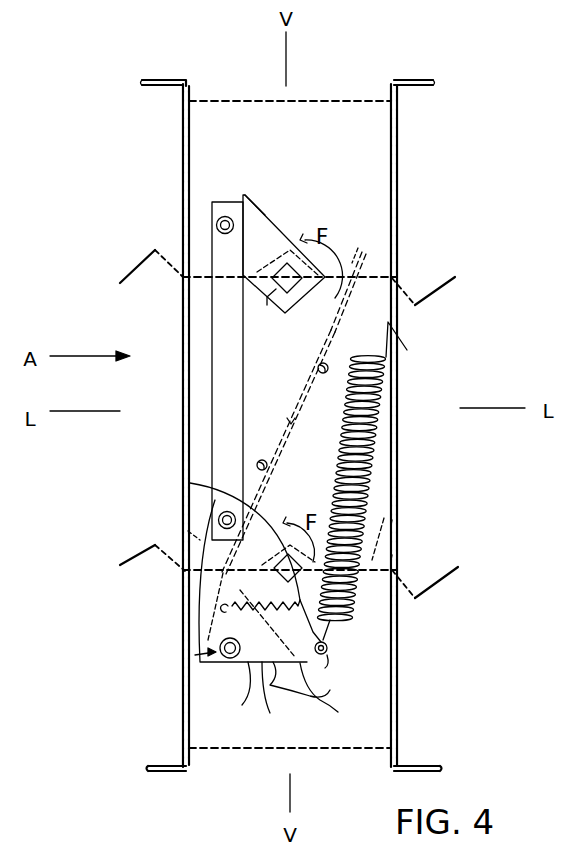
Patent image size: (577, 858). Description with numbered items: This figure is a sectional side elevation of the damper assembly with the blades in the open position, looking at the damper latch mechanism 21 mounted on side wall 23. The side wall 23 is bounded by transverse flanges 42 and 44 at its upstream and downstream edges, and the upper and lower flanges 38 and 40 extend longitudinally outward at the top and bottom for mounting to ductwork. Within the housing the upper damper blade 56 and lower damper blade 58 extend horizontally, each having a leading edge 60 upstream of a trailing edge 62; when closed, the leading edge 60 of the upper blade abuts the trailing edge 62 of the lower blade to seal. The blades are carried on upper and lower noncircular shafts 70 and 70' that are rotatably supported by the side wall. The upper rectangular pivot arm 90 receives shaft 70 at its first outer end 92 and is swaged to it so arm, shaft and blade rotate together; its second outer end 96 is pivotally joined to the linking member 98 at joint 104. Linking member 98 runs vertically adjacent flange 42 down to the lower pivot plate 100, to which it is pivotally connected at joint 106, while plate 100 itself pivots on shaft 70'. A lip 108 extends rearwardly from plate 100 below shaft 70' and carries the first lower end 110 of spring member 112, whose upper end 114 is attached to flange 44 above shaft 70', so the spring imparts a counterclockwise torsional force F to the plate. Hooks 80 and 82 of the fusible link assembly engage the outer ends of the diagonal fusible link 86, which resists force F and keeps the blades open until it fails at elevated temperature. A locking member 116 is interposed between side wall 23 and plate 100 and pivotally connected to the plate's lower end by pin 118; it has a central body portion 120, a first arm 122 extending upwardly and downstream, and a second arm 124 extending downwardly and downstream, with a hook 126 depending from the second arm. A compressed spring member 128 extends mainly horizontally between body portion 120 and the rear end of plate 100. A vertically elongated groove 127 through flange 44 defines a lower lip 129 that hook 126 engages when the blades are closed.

The damper latch mechanism 21 is at (266, 239).
The side wall 23 is at (255, 142).
The upper flange 38 is at (142, 81).
The lower flange 40 is at (148, 767).
The flange 42 is at (184, 186).
The flange 44 is at (397, 178).
The upper damper blade 56 is at (357, 243).
The lower damper blade 58 is at (395, 506).
The leading edge 60 is at (120, 283).
The trailing edge 62 is at (455, 277).
The upper noncircular shaft 70 is at (275, 300).
The lower noncircular shaft 70' is at (288, 532).
The hook 80 is at (278, 483).
The hook 82 is at (320, 344).
The fusible link 86 is at (289, 418).
The upper rectangular pivot arm 90 is at (278, 207).
The first outer end 92 is at (333, 328).
The second outer end 96 is at (243, 194).
The linking member 98 is at (212, 380).
The lower pivot plate 100 is at (197, 598).
The joint 104 is at (222, 216).
The joint 106 is at (190, 484).
The lip 108 is at (325, 668).
The first lower end of spring member 110 is at (330, 652).
The spring member 112 is at (378, 470).
The upper end of spring member 114 is at (408, 336).
The locking member 116 is at (221, 660).
The pin 118 is at (238, 696).
The central body portion 120 is at (185, 630).
The first arm 122 is at (188, 531).
The second arm 124 is at (278, 701).
The hook 126 is at (314, 701).
The vertically elongated groove 127 is at (391, 525).
The spring member 128 is at (263, 620).
The lower lip 129 is at (391, 560).